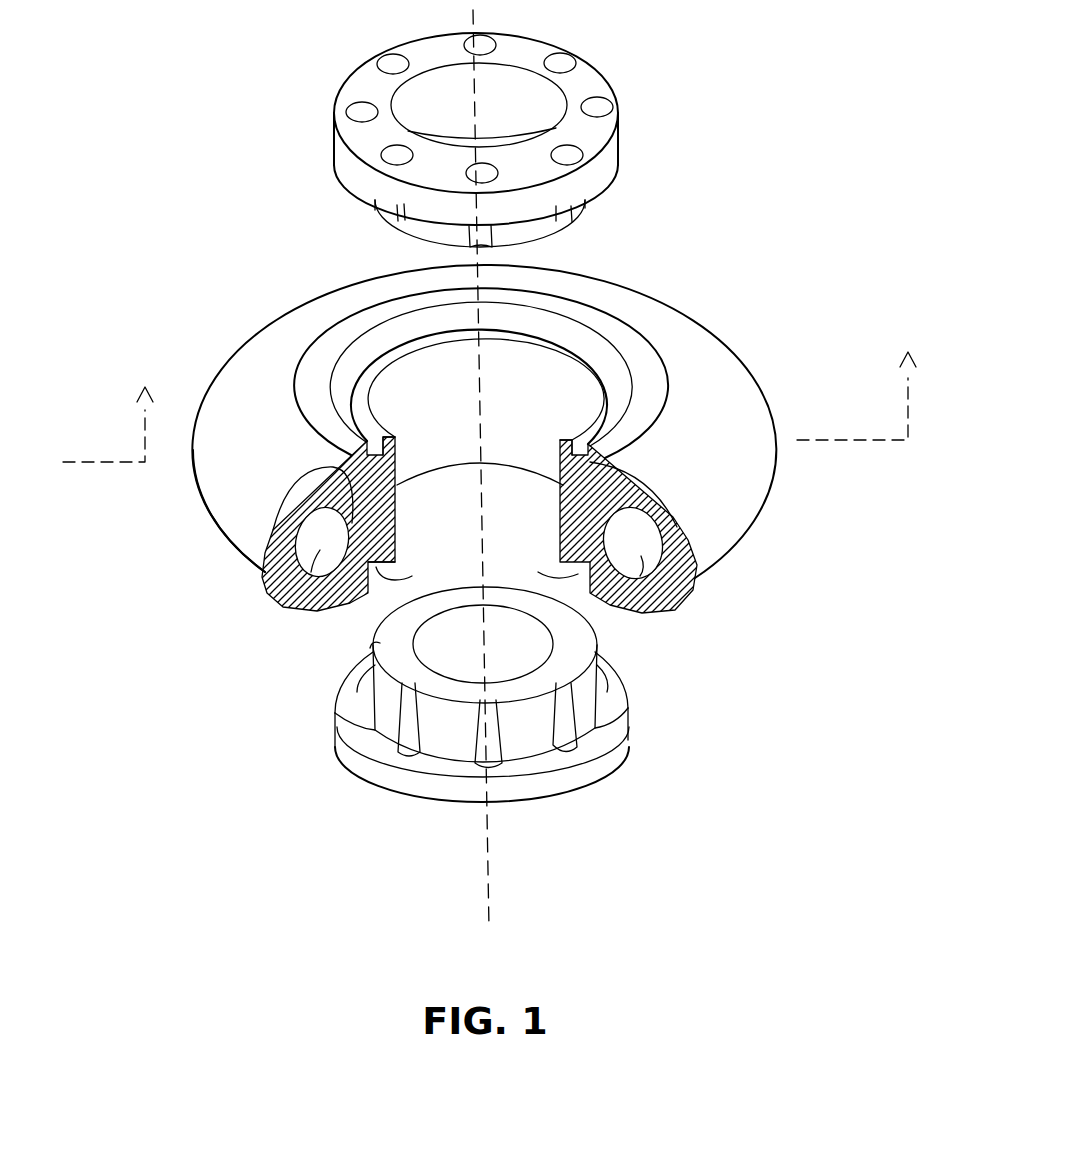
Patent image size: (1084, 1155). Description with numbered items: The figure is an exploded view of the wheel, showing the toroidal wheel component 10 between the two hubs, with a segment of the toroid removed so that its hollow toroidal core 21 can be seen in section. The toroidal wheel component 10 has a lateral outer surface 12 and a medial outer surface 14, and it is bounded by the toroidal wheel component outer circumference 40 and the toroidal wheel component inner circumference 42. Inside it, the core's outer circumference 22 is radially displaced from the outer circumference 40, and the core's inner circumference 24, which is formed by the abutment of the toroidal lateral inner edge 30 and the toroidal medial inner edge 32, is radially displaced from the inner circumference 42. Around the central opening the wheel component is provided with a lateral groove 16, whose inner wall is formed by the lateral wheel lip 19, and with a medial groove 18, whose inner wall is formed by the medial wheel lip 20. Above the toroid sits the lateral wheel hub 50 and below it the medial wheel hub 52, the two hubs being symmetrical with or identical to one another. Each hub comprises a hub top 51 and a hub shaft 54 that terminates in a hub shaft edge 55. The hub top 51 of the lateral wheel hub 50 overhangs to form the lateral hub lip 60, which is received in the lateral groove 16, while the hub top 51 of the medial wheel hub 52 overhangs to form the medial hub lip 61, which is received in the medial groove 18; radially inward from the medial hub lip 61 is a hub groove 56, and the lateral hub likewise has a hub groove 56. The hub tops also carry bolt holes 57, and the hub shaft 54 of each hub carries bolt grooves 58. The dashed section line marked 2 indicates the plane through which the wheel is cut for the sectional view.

The section line 2- 2 is at (502, 404).
The toroidal wheel component 10 is at (225, 362).
The lateral outer surface 12 is at (648, 411).
The medial outer surface 14 is at (345, 612).
The lateral groove 16 is at (612, 388).
The medial groove 18 is at (477, 568).
The lateral wheel lip 19 is at (365, 373).
The medial wheel lip 20 is at (397, 565).
The hollow toroidal core 21 is at (311, 572).
The core outer circumference 22 is at (292, 527).
The core inner circumference 24 is at (680, 523).
The toroidal lateral inner edge 30 is at (333, 467).
The toroidal medial inner edge 32 is at (380, 520).
The toroidal wheel component outer circumference 40 is at (200, 520).
The toroidal wheel component inner circumference 42 is at (540, 360).
The lateral wheel hub 50 is at (612, 75).
The hub top 51 is at (365, 80).
The medial wheel hub 52 is at (630, 727).
The hub shaft 54 is at (527, 227).
The hub shaft edge 55 is at (387, 207).
The hub groove 56 is at (375, 723).
The bolt holes 57 is at (483, 47).
The bolt grooves 58 is at (402, 222).
The lateral hub lip 60 is at (610, 192).
The medial hub lip 61 is at (622, 689).